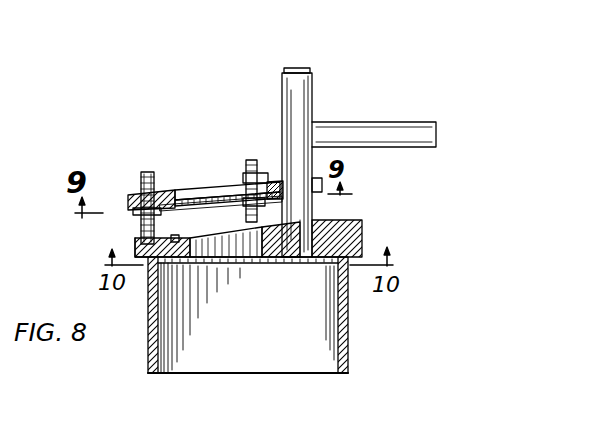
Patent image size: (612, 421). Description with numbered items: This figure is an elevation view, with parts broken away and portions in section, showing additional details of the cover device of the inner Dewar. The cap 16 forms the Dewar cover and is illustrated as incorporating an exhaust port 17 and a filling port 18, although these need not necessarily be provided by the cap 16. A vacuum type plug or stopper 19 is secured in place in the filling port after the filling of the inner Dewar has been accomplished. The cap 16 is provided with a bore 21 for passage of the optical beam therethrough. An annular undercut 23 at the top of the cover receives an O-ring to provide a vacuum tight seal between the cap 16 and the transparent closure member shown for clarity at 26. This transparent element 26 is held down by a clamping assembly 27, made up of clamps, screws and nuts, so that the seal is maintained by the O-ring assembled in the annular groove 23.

The cap 16 is at (350, 220).
The exhaust port 17 is at (408, 128).
The filling port 18 is at (313, 104).
The vacuum type plug or stopper 19 is at (296, 70).
The bore 21 is at (262, 248).
The annular undercut 23 is at (178, 236).
The transparent closure member 26 is at (164, 197).
The clamping assembly 27 is at (128, 218).